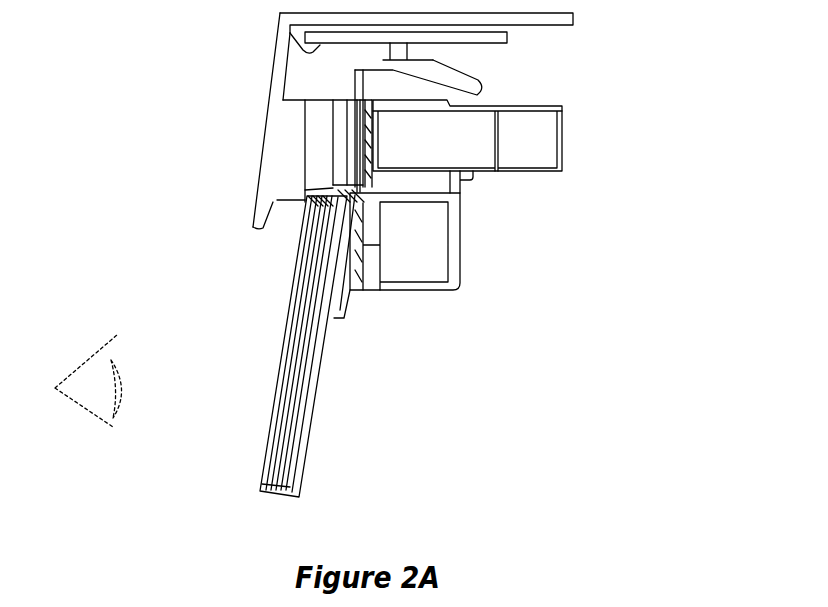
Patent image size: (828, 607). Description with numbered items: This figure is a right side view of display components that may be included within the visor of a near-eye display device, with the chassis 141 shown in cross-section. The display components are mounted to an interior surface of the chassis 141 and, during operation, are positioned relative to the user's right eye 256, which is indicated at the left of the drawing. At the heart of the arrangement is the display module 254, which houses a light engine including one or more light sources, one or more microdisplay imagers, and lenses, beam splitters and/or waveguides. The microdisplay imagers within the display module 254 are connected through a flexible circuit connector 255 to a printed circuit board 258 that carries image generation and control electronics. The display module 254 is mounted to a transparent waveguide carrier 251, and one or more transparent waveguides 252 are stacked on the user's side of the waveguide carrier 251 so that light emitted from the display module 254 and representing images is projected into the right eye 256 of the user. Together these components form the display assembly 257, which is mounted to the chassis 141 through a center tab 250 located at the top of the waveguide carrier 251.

The chassis 141 is at (268, 138).
The center tab 250 is at (303, 173).
The transparent waveguide carrier 251 is at (300, 462).
The transparent waveguides 252 is at (275, 393).
The display module 254 is at (481, 230).
The flexible circuit connector 255 is at (490, 93).
The right eye 256 is at (124, 378).
The display assembly 257 is at (594, 91).
The printed circuit board 258 is at (280, 32).